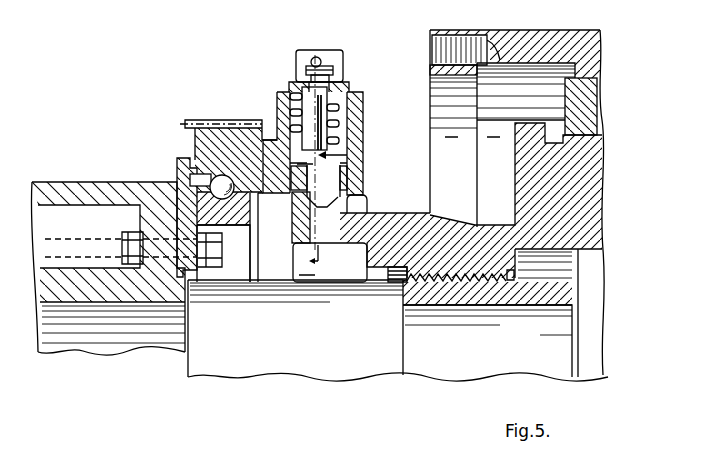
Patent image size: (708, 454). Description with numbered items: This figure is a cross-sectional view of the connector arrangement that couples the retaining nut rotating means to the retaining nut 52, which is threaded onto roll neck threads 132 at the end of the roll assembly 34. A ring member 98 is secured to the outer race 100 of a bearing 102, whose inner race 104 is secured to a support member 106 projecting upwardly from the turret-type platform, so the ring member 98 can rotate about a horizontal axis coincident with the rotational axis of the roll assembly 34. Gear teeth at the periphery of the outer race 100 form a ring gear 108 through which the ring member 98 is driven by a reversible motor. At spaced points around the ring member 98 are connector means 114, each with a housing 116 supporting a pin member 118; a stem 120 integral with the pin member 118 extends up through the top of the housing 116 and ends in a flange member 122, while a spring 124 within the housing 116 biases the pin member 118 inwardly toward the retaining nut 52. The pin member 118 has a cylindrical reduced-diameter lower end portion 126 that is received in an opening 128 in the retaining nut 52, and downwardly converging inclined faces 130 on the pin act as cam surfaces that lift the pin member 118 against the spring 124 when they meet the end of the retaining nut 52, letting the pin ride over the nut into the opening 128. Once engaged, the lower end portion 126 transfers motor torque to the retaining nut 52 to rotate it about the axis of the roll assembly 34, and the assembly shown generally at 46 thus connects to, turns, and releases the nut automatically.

The roll assembly 34 is at (500, 378).
The relief valve assembly 46 is at (375, 62).
The retaining nut 52 is at (437, 218).
The ring member 98 is at (287, 207).
The outer race 100 is at (200, 140).
The bearing 102 is at (188, 172).
The inner race 104 is at (235, 226).
The support member 106 is at (107, 182).
The ring gear 108 is at (292, 77).
The connector means 114 is at (382, 116).
The housing 116 is at (364, 142).
The pin member 118 is at (346, 179).
The stem 120 is at (326, 128).
The flange member 122 is at (308, 66).
The spring 124 is at (293, 112).
The lower end portion 126 is at (330, 208).
The opening 128 is at (334, 243).
The inclined faces 130 is at (368, 203).
The roll neck threads 132 is at (468, 290).